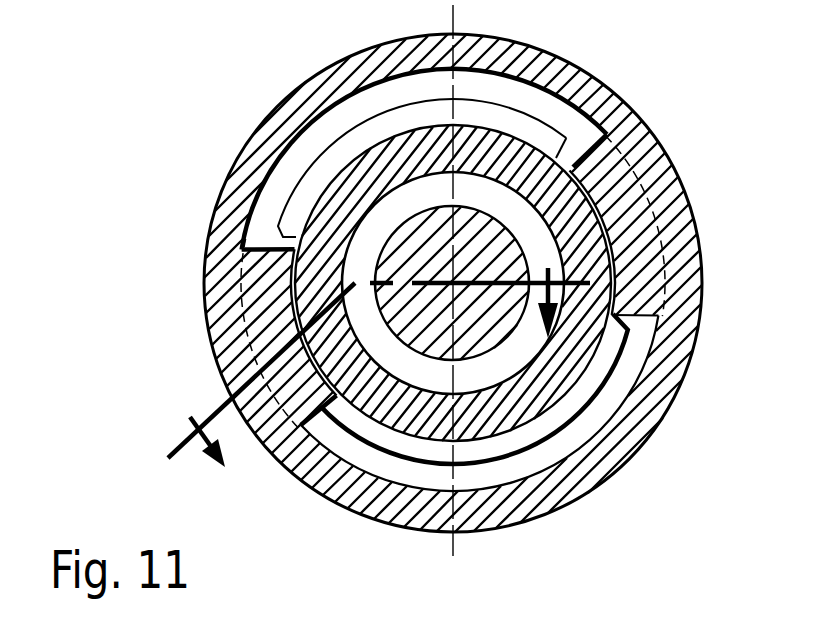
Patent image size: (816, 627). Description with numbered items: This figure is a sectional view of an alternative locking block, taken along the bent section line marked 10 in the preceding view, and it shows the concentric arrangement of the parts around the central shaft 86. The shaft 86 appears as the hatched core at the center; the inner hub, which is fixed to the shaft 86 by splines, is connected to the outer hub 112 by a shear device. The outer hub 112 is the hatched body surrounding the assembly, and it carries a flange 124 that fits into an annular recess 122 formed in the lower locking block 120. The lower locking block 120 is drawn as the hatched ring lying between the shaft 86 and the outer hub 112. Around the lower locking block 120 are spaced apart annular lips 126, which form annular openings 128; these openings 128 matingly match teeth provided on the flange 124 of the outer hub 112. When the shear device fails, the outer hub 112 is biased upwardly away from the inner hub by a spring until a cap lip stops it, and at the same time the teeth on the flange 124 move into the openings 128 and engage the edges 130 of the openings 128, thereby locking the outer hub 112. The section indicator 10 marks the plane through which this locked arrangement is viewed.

The outer hub 112 is at (300, 87).
The annular lips 126 is at (323, 163).
The edges of openings 130 is at (278, 236).
The annular openings 128 is at (280, 248).
The flange 124 is at (265, 292).
The shaft 86 is at (445, 242).
The annular recess 122 is at (335, 342).
The lower locking block 120 is at (523, 402).
The section line 10 is at (369, 347).